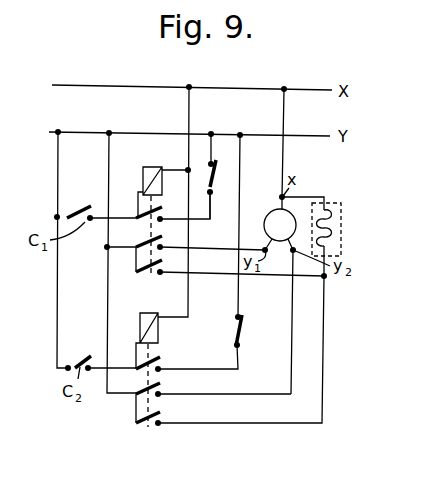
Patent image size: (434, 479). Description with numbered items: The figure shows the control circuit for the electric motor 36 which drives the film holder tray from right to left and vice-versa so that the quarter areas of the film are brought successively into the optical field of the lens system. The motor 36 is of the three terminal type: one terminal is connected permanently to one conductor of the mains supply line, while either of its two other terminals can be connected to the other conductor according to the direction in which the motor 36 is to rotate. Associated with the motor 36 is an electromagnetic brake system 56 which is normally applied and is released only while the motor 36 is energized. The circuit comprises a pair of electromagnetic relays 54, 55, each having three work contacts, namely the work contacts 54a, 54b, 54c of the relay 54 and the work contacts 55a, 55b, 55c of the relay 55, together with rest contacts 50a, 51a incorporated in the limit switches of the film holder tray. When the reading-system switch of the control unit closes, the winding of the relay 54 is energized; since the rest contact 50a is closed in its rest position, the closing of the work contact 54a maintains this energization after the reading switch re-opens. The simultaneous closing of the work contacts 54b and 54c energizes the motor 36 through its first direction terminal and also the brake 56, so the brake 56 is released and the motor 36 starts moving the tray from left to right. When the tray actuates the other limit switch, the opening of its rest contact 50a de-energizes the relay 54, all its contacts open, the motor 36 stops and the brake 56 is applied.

The electromagnetic relay 54 is at (143, 172).
The work contact 54a is at (138, 212).
The work contact 54b is at (145, 242).
The work contact 54c is at (143, 273).
The electromagnetic relay 55 is at (154, 307).
The work contact 55a is at (160, 359).
The work contact 55b is at (160, 380).
The work contact 55c is at (160, 410).
The rest contact 50a is at (215, 178).
The rest contact 51a is at (243, 330).
The electric motor 36 is at (270, 217).
The electromagnetic brake system 56 is at (334, 229).